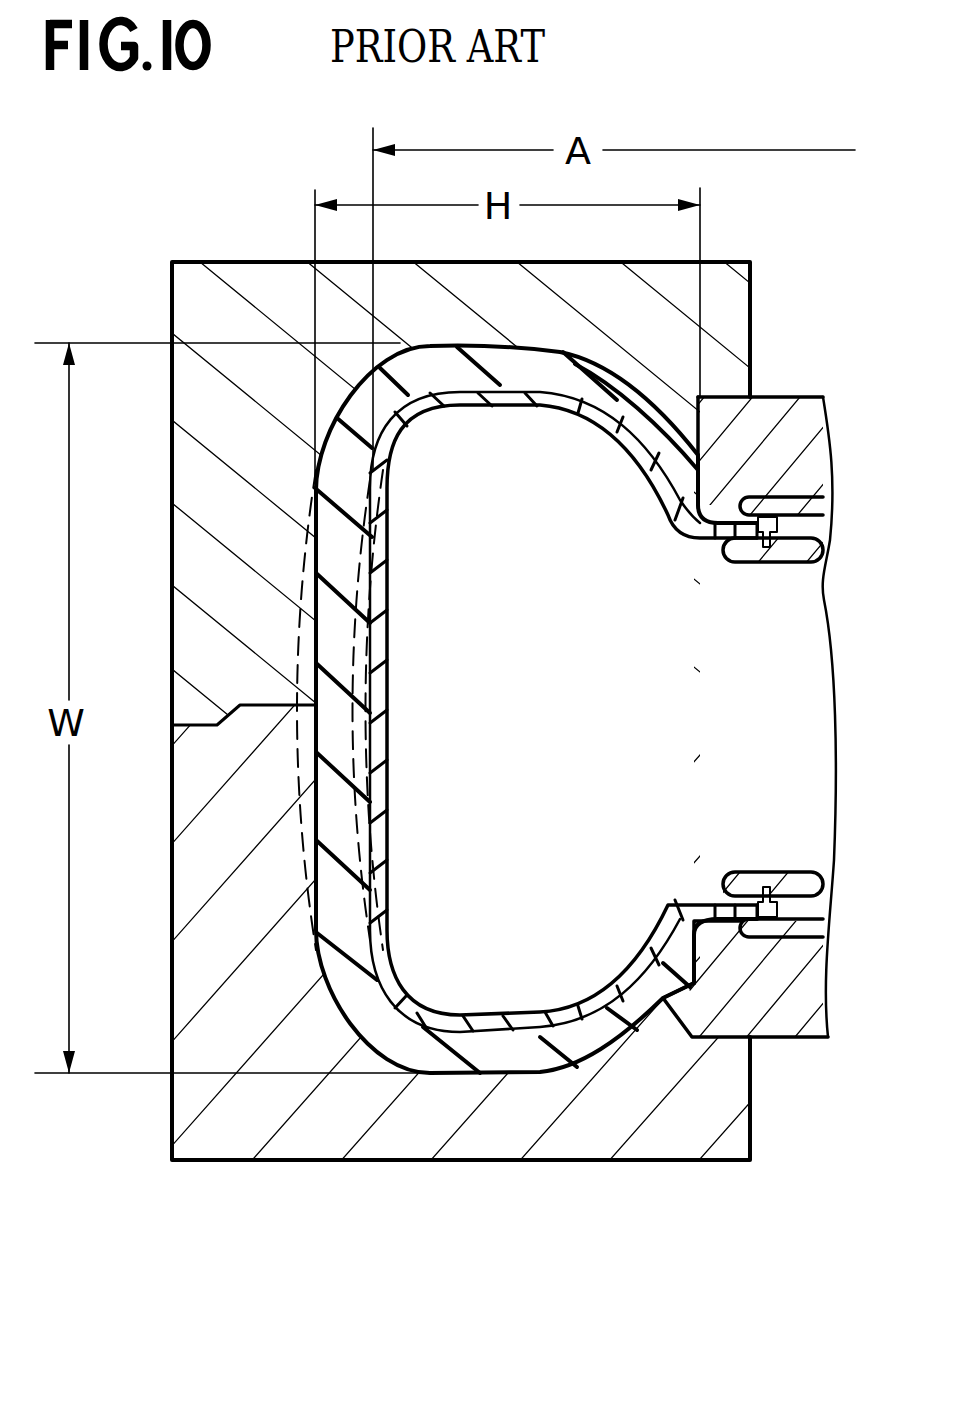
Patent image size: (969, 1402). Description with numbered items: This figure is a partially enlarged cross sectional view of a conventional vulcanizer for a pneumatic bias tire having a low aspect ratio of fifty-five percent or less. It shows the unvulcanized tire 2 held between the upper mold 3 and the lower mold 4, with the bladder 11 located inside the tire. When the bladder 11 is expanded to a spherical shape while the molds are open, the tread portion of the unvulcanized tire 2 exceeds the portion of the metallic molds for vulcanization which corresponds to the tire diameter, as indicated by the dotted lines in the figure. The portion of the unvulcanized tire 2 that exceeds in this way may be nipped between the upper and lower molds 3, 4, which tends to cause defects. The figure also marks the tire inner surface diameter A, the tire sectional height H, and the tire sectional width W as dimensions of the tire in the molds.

The unvulcanized tire 2 is at (602, 1042).
The upper mold 3 is at (197, 304).
The lower mold 4 is at (203, 1107).
The bladder 11 is at (503, 1030).